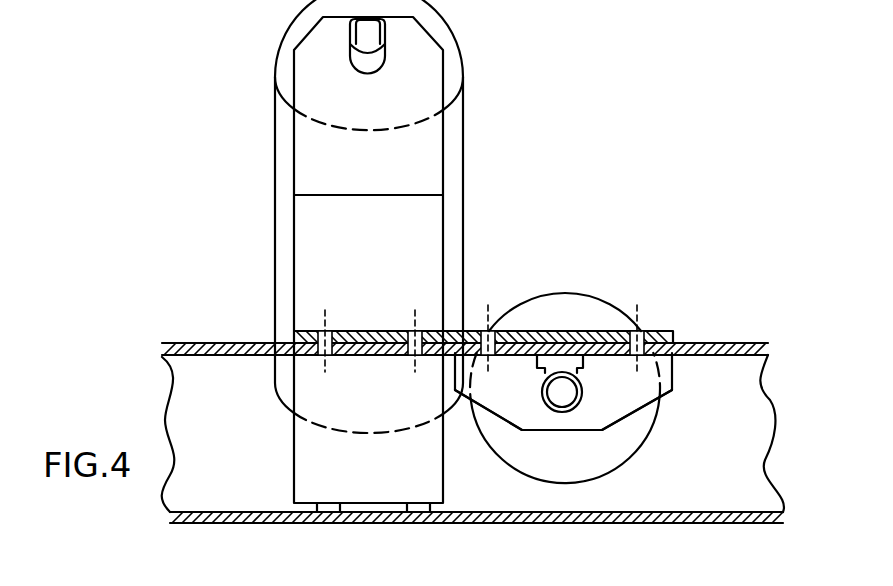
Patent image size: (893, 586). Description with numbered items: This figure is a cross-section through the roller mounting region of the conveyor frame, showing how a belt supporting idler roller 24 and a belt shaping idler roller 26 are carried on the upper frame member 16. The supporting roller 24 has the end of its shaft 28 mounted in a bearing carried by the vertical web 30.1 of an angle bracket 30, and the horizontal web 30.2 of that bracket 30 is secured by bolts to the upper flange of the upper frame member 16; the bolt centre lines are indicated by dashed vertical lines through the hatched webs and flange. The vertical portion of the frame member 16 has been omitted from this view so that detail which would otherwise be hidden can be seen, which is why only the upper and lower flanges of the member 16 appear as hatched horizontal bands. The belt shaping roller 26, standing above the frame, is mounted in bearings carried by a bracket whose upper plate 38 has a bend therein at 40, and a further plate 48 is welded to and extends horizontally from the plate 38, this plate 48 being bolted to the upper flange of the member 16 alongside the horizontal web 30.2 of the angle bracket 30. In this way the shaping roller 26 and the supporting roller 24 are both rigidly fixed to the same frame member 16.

The upper frame member 16 is at (229, 343).
The belt supporting idler roller 24 is at (607, 474).
The belt shaping idler roller 26 is at (277, 210).
The shaft 28 is at (548, 407).
The angle bracket 30 is at (673, 373).
The vertical web 30.1 is at (625, 393).
The horizontal web 30.2 is at (665, 331).
The upper plate 38 is at (437, 42).
The bend 40 is at (433, 197).
The further plate 48 is at (384, 332).